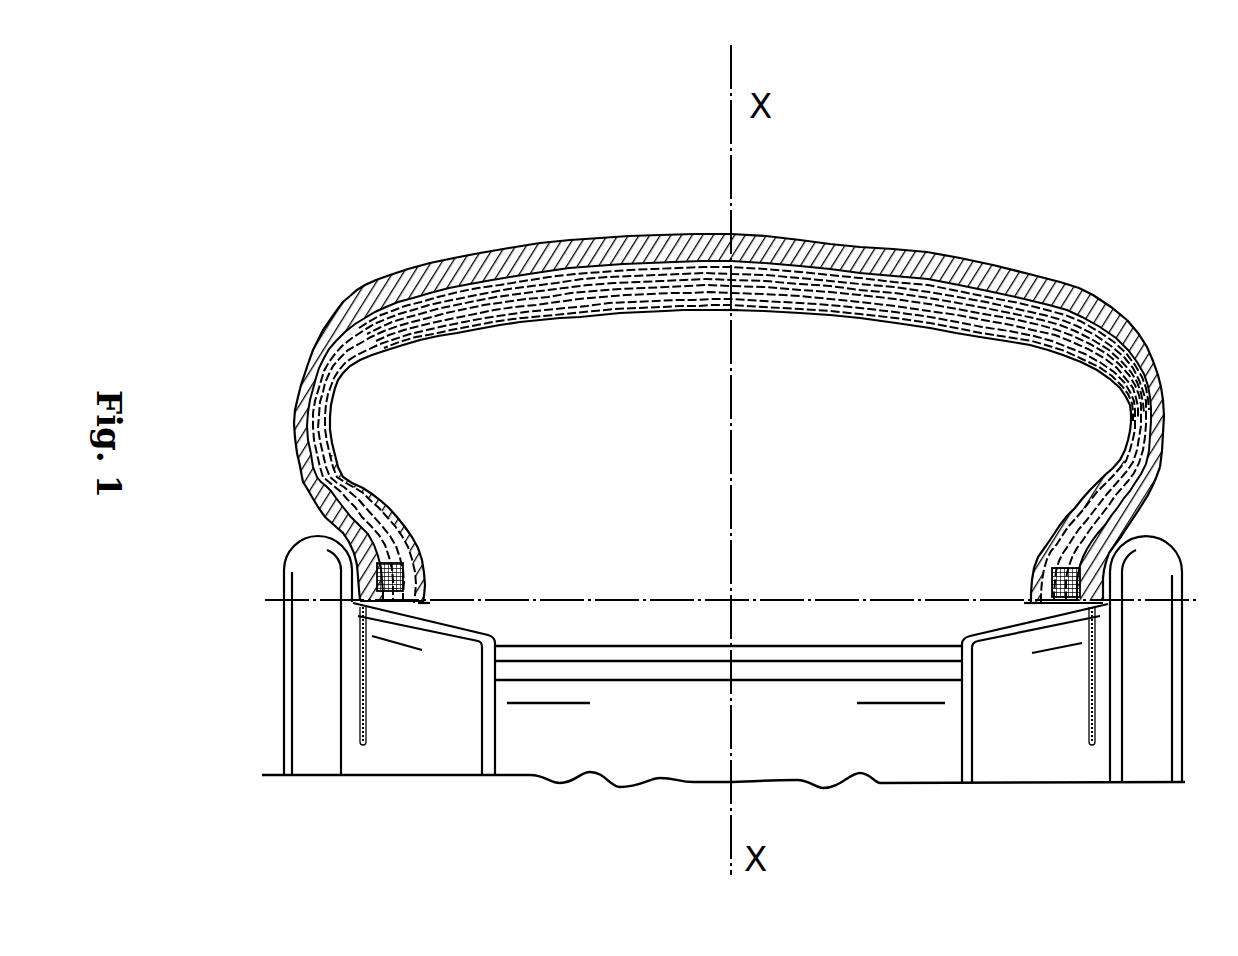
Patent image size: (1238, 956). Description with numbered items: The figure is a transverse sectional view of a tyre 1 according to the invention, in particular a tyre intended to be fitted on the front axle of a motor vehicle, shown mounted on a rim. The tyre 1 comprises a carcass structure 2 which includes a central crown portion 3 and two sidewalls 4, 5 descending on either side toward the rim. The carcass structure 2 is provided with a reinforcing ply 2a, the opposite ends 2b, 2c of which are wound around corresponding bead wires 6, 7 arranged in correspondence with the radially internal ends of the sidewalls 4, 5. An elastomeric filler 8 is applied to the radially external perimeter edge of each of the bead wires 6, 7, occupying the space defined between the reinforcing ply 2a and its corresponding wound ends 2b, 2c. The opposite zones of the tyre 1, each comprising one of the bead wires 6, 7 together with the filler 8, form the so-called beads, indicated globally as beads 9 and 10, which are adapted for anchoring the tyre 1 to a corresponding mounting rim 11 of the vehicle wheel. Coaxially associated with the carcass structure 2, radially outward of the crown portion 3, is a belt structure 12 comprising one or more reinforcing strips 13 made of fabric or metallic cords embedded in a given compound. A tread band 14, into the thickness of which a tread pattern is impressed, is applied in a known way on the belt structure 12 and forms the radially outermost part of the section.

The tyre 1 is at (272, 279).
The carcass structure 2 is at (932, 330).
The reinforcing ply 2a is at (380, 486).
The end of reinforcing ply 2b is at (327, 516).
The end of reinforcing ply 2c is at (1128, 523).
The central crown portion 3 is at (740, 313).
The sidewall 4 is at (303, 382).
The sidewall 5 is at (1165, 392).
The bead wire 6 is at (440, 563).
The bead wire 7 is at (1033, 580).
The elastomeric filler 8 is at (403, 541).
The bead 9 is at (431, 598).
The bead 10 is at (1028, 597).
The mounting rim 11 is at (421, 757).
The belt structure 12 is at (1136, 271).
The reinforcing strip 13 is at (1048, 282).
The tread band 14 is at (897, 247).